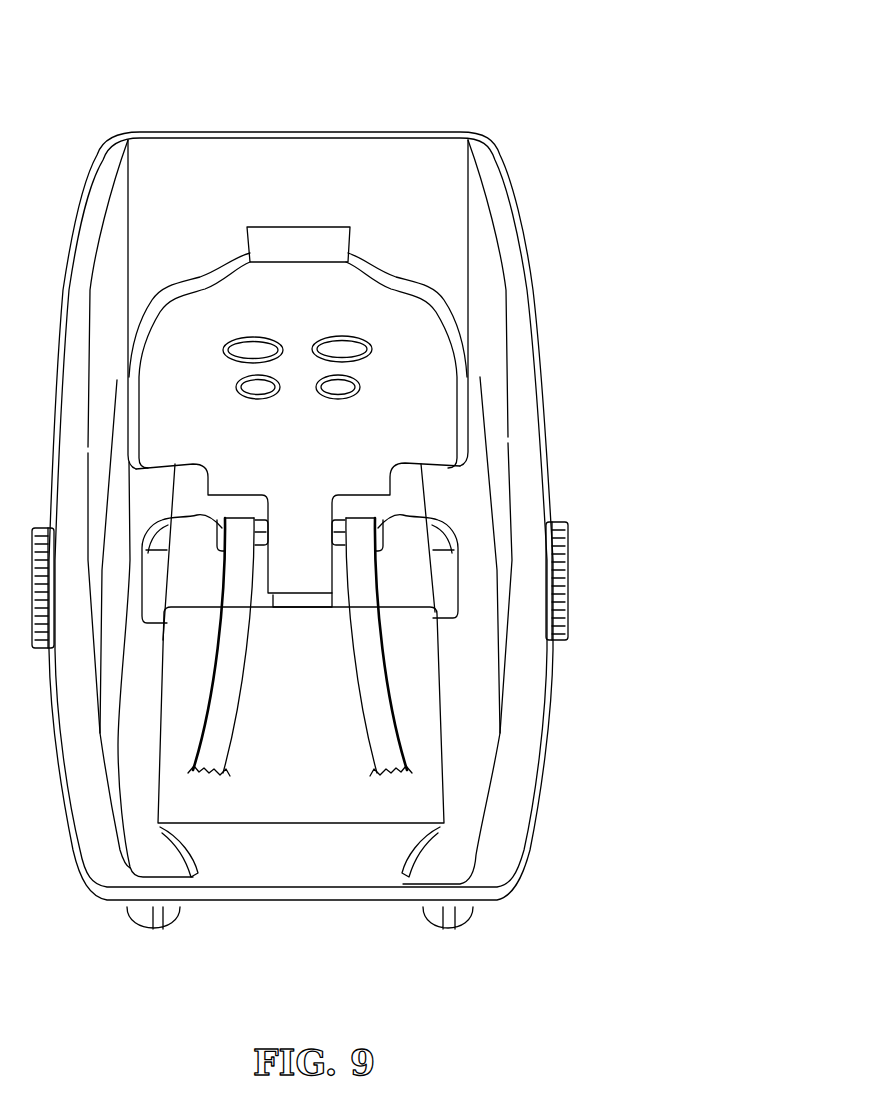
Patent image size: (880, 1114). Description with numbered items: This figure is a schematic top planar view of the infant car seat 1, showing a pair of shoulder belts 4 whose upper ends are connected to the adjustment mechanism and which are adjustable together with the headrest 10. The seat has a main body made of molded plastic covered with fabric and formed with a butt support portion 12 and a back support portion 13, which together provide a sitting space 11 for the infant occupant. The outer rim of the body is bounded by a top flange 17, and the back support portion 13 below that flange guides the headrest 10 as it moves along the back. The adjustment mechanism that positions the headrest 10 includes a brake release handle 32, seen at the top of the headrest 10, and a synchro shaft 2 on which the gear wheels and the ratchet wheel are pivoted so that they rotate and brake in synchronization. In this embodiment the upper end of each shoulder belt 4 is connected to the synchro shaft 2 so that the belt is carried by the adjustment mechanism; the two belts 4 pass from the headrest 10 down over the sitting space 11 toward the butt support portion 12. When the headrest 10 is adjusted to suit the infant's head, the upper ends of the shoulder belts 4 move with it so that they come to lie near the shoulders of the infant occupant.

The child safety seat 1 is at (509, 102).
The synchro shaft 2 is at (168, 522).
The shoulder belt 4 is at (228, 683).
The headrest 10 is at (313, 454).
The sitting space 11 is at (316, 731).
The butt support portion 12 is at (314, 874).
The back support portion 13 is at (303, 198).
The top flange 17 is at (340, 137).
The brake release handle 32 is at (272, 240).